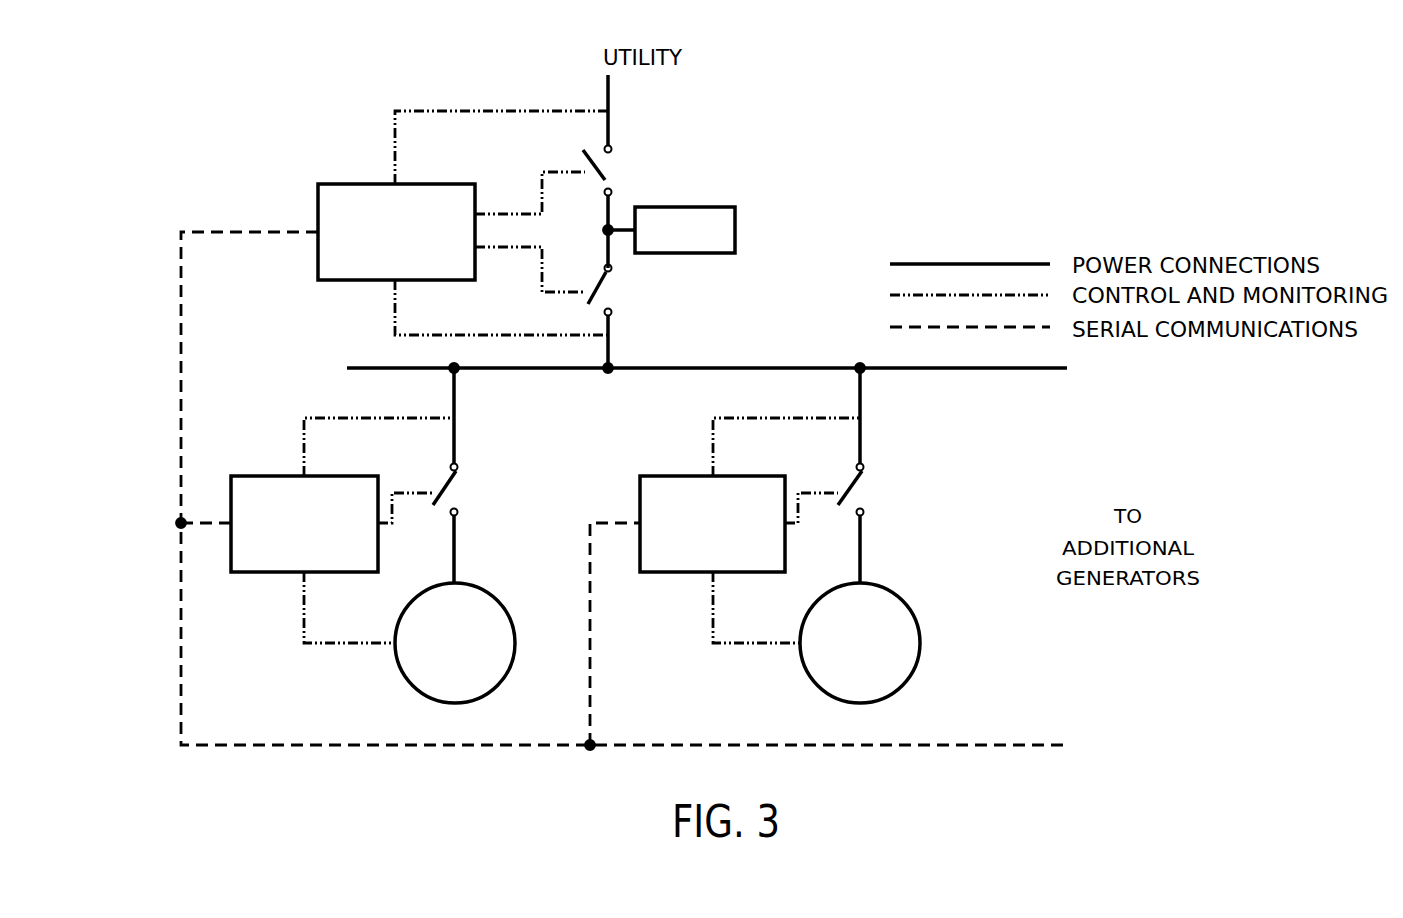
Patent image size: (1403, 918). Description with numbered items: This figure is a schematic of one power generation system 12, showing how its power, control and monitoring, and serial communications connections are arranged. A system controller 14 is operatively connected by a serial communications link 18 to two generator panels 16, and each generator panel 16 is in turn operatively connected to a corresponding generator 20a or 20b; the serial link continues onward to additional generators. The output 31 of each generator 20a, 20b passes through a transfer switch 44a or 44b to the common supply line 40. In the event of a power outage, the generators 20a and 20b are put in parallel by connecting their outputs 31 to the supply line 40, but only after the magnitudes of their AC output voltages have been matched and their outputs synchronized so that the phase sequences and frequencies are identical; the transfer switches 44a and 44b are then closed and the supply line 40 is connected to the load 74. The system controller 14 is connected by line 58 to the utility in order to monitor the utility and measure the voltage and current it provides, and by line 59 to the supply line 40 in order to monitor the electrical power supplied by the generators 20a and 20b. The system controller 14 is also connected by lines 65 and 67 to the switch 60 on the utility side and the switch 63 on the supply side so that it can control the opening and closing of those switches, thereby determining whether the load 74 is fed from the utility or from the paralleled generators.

The power generation system 12 is at (1228, 472).
The system controller 14 is at (318, 198).
The generator panel 16 is at (262, 572).
The serial communications link 18 is at (181, 456).
The generator 20a is at (517, 643).
The generator 20b is at (922, 643).
The output 31 is at (457, 550).
The supply line 40 is at (457, 388).
The transfer switch 44a is at (450, 483).
The transfer switch 44b is at (856, 483).
The line 58 is at (503, 111).
The line 59 is at (503, 335).
The utility breaker 60 is at (611, 176).
The switch 63 is at (611, 284).
The line 65 is at (505, 212).
The line 67 is at (545, 270).
The load 74 is at (689, 207).